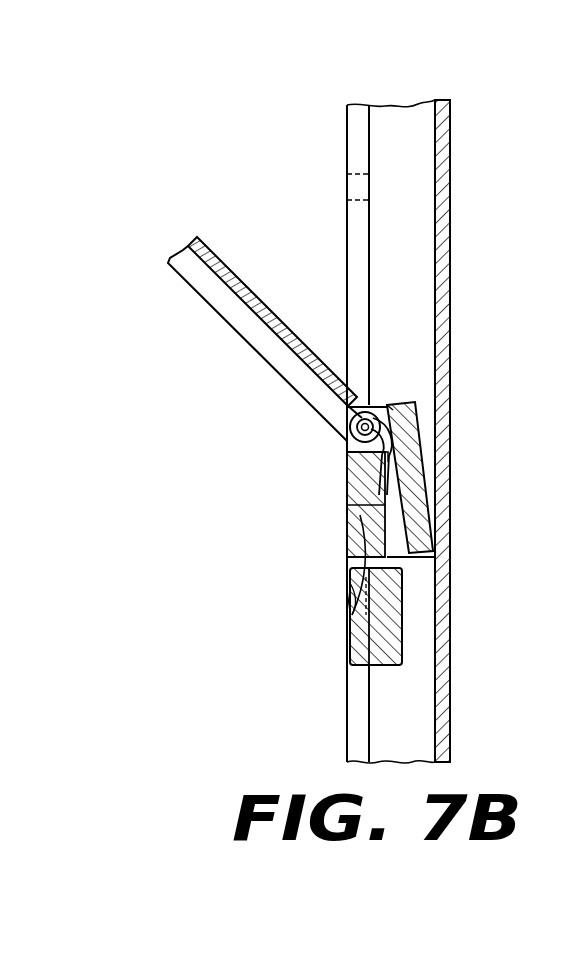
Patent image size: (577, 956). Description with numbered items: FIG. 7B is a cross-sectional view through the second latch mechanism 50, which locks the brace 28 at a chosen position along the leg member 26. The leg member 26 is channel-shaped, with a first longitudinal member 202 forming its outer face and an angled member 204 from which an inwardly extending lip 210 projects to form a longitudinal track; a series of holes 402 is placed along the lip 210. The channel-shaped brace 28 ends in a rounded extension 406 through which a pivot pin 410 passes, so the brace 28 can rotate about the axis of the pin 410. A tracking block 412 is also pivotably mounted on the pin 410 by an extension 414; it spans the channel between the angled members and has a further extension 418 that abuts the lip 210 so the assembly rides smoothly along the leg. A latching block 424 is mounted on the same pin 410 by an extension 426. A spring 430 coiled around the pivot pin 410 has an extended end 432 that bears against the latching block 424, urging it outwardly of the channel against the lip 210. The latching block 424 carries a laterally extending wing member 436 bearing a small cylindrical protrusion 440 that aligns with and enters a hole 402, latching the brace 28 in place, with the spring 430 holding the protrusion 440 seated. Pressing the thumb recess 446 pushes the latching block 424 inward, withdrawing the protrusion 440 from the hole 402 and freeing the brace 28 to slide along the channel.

The angled member 204 is at (403, 123).
The first longitudinal member 202 is at (450, 185).
The leg member 26 is at (450, 273).
The lip 210 is at (347, 137).
The hole 402 is at (347, 186).
The brace 28 is at (218, 295).
The rounded extension 406 is at (345, 428).
The spring 430 is at (357, 416).
The pivot pin 410 is at (347, 430).
The extension 426 is at (347, 448).
The extended end 432 is at (347, 525).
The tracking block 412 is at (418, 490).
The extension 414 is at (386, 403).
The further extension 418 is at (398, 535).
The thumb recess 446 is at (355, 563).
The latching block 424 is at (350, 583).
The cylindrically-shaped protrusion 440 is at (343, 600).
The wing member 436 is at (367, 685).
The second latch mechanism 50 is at (260, 502).